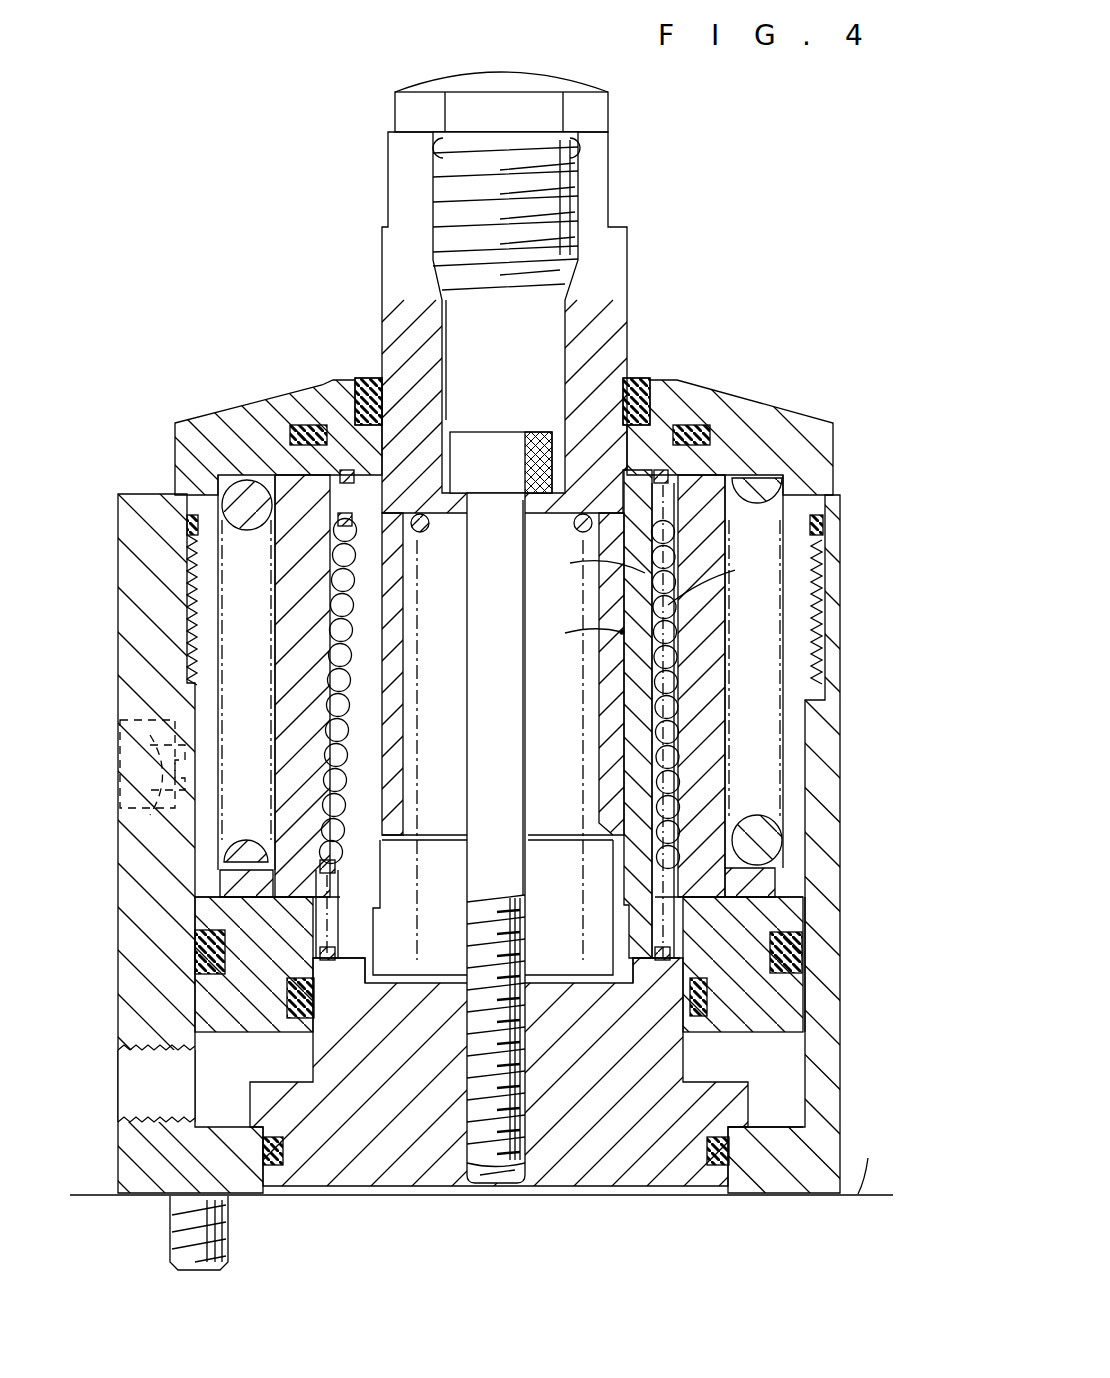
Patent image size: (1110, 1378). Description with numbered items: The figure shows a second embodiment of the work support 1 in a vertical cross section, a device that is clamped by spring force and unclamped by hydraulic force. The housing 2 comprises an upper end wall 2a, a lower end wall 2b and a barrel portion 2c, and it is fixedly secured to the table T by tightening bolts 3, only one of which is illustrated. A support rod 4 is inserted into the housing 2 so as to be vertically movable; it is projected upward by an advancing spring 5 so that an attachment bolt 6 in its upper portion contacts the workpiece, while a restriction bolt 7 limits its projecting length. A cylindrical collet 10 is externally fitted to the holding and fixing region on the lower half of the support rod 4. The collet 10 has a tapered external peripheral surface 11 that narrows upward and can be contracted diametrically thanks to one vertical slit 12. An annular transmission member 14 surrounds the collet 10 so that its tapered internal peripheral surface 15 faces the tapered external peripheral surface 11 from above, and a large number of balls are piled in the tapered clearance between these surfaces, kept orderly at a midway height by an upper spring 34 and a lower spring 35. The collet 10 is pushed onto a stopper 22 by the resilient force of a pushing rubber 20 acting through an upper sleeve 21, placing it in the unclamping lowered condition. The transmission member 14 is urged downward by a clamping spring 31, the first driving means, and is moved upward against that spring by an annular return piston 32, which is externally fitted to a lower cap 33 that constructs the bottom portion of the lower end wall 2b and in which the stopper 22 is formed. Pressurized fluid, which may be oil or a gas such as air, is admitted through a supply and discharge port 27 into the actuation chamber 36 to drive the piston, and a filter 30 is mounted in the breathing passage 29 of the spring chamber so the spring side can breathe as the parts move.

The work support 1 is at (800, 240).
The housing 2 is at (851, 880).
The upper end wall 2a is at (740, 408).
The lower end wall 2b is at (742, 1190).
The barrel portion 2c is at (835, 937).
The tightening bolt 3 is at (175, 1245).
The support rod 4 is at (627, 250).
The advancing spring 5 is at (578, 965).
The attachment bolt 6 is at (597, 120).
The restriction bolt 7 is at (509, 432).
The collet 10 is at (608, 756).
The tapered external peripheral surface 11 is at (645, 700).
The slit 12 is at (372, 730).
The transmission member 14 is at (757, 659).
The tapered internal peripheral surface 15 is at (665, 680).
The pushing rubber 20 is at (693, 437).
The upper sleeve 21 is at (663, 468).
The stopper 22 is at (352, 972).
The supply and discharge port 27 is at (125, 1098).
The breathing passage 29 is at (118, 740).
The filter 30 is at (145, 852).
The clamping spring 31 is at (770, 832).
The return piston 32 is at (790, 993).
The lower cap 33 is at (605, 1162).
The upper spring 34 is at (640, 425).
The lower spring 35 is at (655, 962).
The actuation chamber 36 is at (210, 1048).